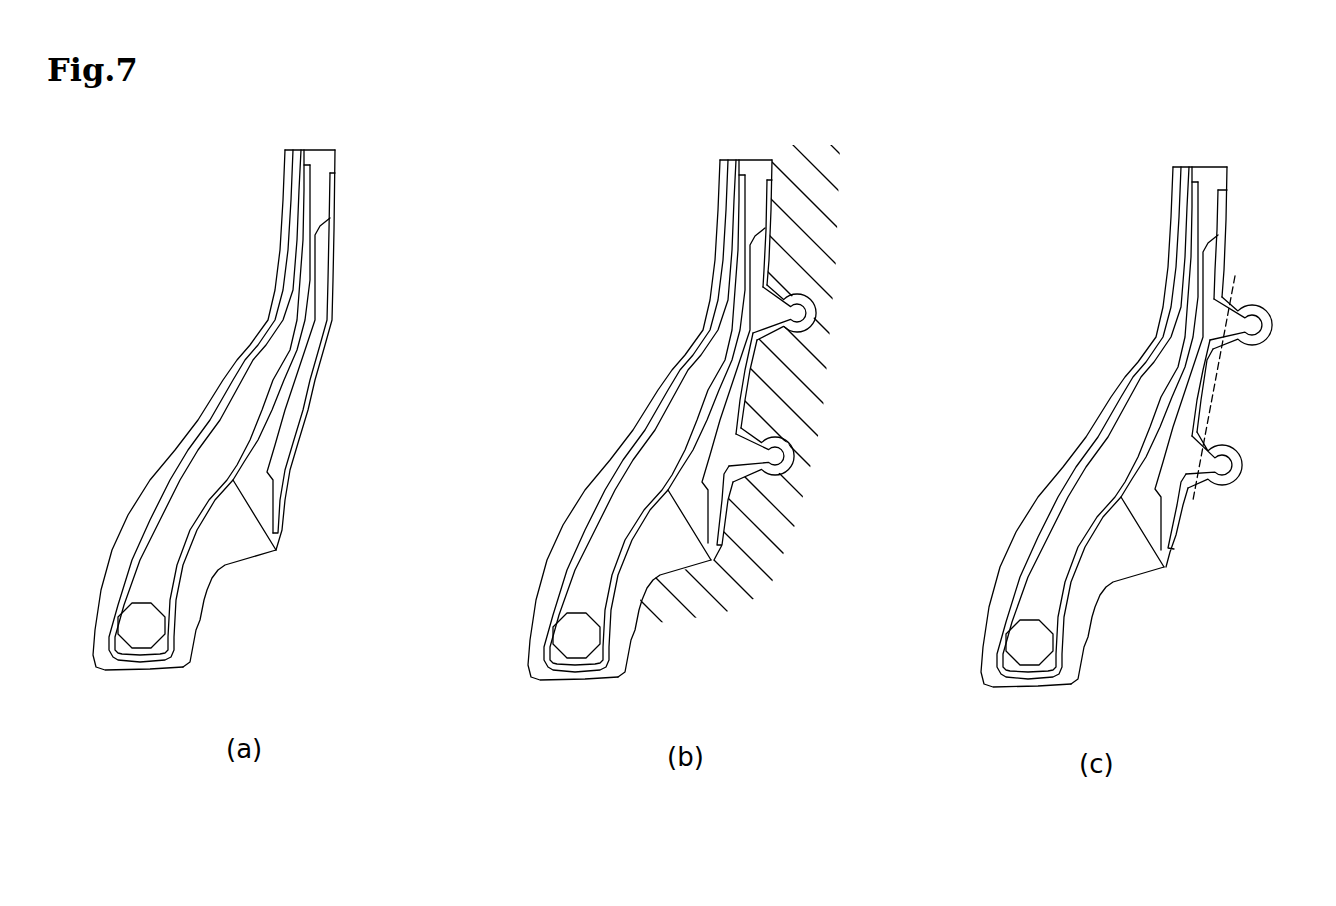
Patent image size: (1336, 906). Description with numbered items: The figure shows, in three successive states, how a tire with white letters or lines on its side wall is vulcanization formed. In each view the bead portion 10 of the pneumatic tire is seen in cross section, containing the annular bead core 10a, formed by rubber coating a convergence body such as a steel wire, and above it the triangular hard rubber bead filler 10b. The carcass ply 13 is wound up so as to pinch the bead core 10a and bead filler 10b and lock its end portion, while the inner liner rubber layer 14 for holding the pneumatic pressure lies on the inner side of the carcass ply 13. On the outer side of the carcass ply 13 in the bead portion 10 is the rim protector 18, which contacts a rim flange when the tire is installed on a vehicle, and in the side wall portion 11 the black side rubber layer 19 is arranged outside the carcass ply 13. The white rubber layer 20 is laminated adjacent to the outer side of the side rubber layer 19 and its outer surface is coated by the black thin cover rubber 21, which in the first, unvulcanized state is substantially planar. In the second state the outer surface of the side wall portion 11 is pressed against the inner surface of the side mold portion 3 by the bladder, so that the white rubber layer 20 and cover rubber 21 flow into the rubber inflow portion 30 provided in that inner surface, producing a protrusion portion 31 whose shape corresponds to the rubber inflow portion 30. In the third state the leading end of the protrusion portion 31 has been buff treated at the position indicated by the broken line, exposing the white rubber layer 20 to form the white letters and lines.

The side mold portion 3 is at (763, 542).
The bead portion 10 is at (255, 635).
The bead core 10a is at (138, 613).
The bead filler 10b is at (167, 533).
The side wall portion 11 is at (350, 377).
The carcass ply 13 is at (287, 252).
The inner liner rubber layer 14 is at (283, 197).
The rim protector 18 is at (225, 565).
The side rubber layer 19 is at (326, 160).
The white rubber layer 20 is at (315, 316).
The cover rubber 21 is at (333, 272).
The rubber inflow portion 30 is at (816, 310).
The protrusion portion 31 is at (817, 343).